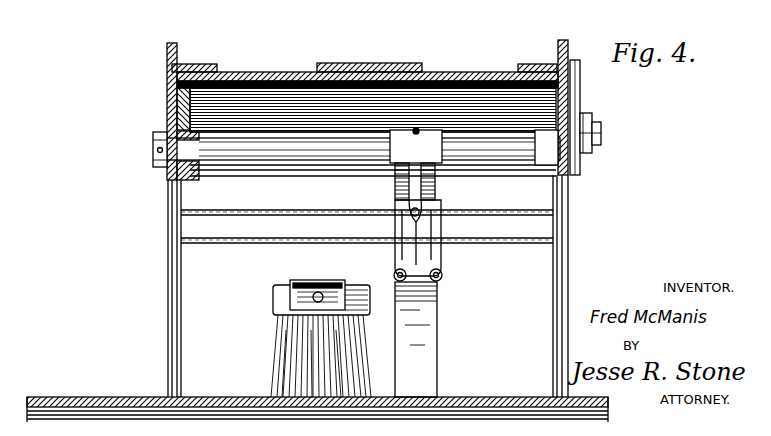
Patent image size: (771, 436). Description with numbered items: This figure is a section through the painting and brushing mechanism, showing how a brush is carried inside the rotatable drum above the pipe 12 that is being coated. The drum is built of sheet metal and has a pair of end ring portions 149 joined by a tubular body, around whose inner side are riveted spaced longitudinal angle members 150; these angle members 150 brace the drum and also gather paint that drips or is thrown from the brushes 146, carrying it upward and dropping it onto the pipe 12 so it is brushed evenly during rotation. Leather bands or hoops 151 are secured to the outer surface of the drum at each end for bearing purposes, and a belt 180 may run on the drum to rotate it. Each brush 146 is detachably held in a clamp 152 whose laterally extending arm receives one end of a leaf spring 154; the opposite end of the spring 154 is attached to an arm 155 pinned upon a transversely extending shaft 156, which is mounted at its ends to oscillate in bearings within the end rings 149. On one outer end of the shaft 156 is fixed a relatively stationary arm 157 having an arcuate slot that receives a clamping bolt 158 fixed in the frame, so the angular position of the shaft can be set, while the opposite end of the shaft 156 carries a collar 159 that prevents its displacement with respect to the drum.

The pipe 12 is at (116, 397).
The brushes 146 is at (274, 346).
The end ring portions 149 is at (166, 93).
The longitudinal angle members 150 is at (450, 90).
The bands or hoops 151 is at (203, 64).
The clamp 152 is at (293, 284).
The leaf spring 154 is at (438, 316).
The arm 155 is at (442, 190).
The shaft 156 is at (352, 158).
The stationary arm 157 is at (581, 92).
The clamping bolt 158 is at (601, 124).
The collar 159 is at (152, 167).
The belt 180 is at (380, 48).